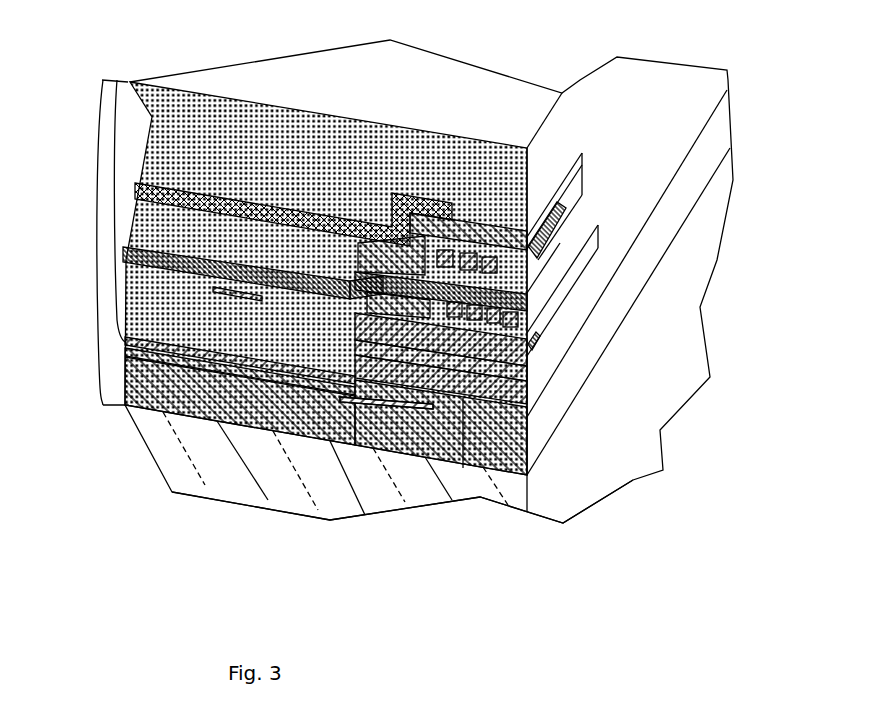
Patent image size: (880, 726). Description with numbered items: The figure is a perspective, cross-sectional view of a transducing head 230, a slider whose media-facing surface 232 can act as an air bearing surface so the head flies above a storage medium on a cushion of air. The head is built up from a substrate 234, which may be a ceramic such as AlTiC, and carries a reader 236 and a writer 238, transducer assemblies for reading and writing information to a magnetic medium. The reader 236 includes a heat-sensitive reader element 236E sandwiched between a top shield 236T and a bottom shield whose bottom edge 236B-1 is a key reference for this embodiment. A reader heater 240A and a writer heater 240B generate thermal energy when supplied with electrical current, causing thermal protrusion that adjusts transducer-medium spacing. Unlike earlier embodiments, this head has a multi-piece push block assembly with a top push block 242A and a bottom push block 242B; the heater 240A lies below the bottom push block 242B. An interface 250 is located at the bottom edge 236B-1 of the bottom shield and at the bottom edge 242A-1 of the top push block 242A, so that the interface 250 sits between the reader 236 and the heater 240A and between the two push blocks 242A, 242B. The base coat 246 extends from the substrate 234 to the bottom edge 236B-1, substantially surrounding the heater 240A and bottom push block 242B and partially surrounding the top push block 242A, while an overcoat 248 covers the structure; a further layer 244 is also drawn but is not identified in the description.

The transducing head 230 is at (534, 63).
The media-facing surface 232 is at (603, 448).
The substrate 234 is at (267, 487).
The reader 236 is at (537, 359).
The top shield 236T is at (530, 332).
The reader element 236E is at (530, 349).
The bottom edge of the bottom shield 236B-1 is at (527, 477).
The writer 238 is at (546, 268).
The heater 240A is at (362, 412).
The writer heater 240B is at (243, 290).
The top push block 242A is at (218, 355).
The bottom edge of the top push block 242A-1 is at (180, 357).
The bottom push block 242B is at (235, 400).
The conductive line 244 is at (123, 250).
The base coat 246 is at (118, 380).
The overcoat 248 is at (117, 217).
The interface 250 is at (465, 402).